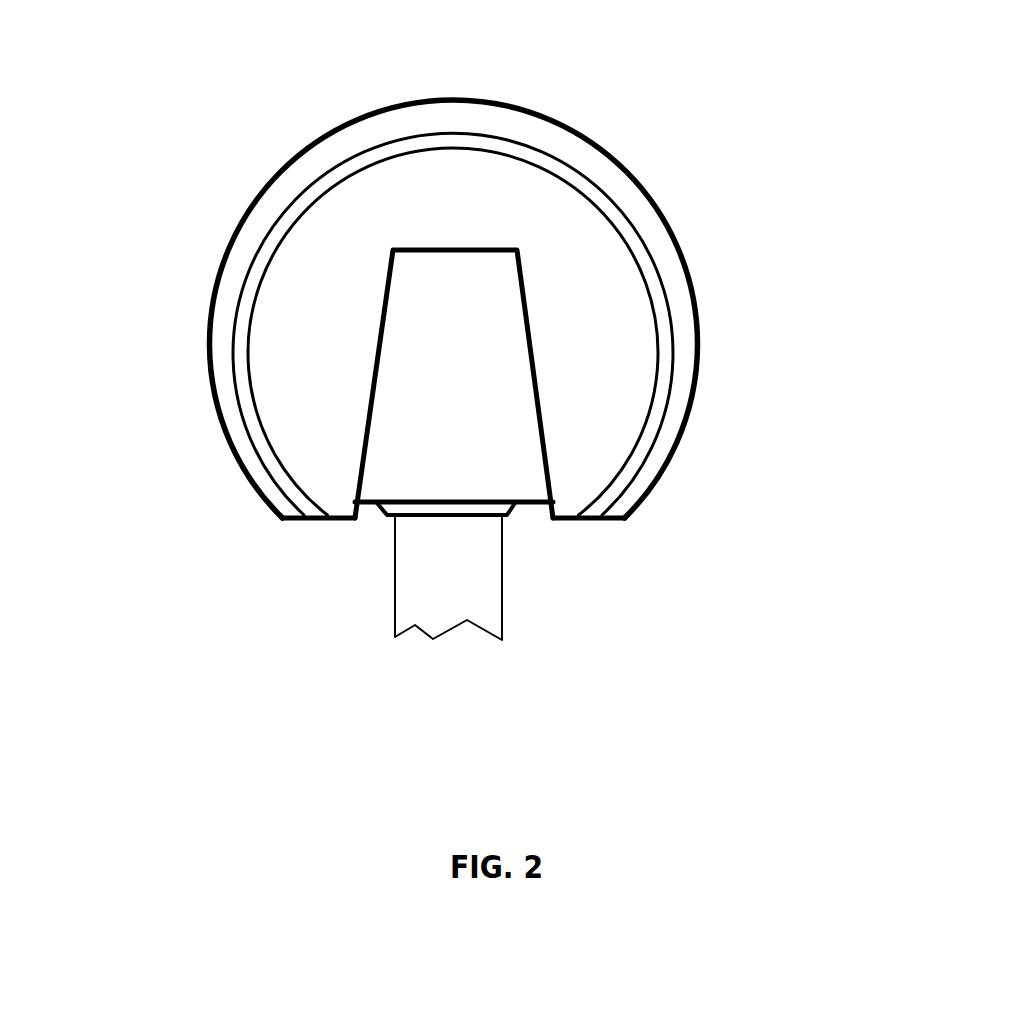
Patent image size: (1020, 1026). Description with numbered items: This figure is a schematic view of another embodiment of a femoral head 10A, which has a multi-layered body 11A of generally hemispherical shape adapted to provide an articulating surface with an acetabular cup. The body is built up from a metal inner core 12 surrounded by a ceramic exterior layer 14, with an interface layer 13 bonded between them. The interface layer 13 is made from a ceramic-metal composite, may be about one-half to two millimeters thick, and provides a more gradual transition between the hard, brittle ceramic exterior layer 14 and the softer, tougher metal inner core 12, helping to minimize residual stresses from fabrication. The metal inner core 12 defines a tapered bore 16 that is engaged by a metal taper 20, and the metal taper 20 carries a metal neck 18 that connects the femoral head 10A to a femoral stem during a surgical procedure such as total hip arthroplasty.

The femoral head 10A is at (705, 135).
The multi-layered body 11A is at (447, 95).
The metal inner core 12 is at (618, 358).
The interface layer 13 is at (628, 228).
The ceramic exterior layer 14 is at (238, 262).
The tapered bore 16 is at (543, 447).
The metal neck 18 is at (420, 577).
The metal taper 20 is at (397, 424).